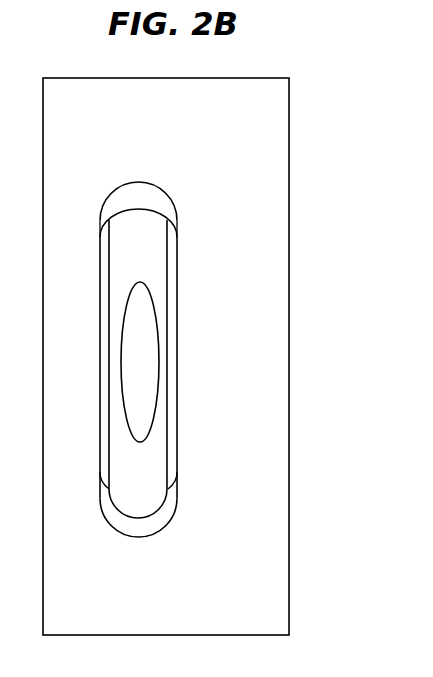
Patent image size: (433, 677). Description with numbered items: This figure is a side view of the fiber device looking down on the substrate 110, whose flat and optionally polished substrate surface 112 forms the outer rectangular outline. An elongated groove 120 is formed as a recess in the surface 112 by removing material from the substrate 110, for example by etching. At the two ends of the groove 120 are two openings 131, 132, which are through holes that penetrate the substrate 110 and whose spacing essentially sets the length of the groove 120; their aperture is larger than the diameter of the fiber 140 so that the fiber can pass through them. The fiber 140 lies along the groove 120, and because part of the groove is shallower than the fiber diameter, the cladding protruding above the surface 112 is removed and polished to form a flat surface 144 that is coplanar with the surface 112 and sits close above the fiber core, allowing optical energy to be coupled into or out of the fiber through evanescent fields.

The substrate 110 is at (289, 488).
The substrate surface 112 is at (279, 628).
The elongated groove 120 is at (172, 433).
The opening 131 is at (138, 526).
The opening 132 is at (147, 190).
The fiber 140 is at (147, 265).
The flat surface 144 is at (137, 330).